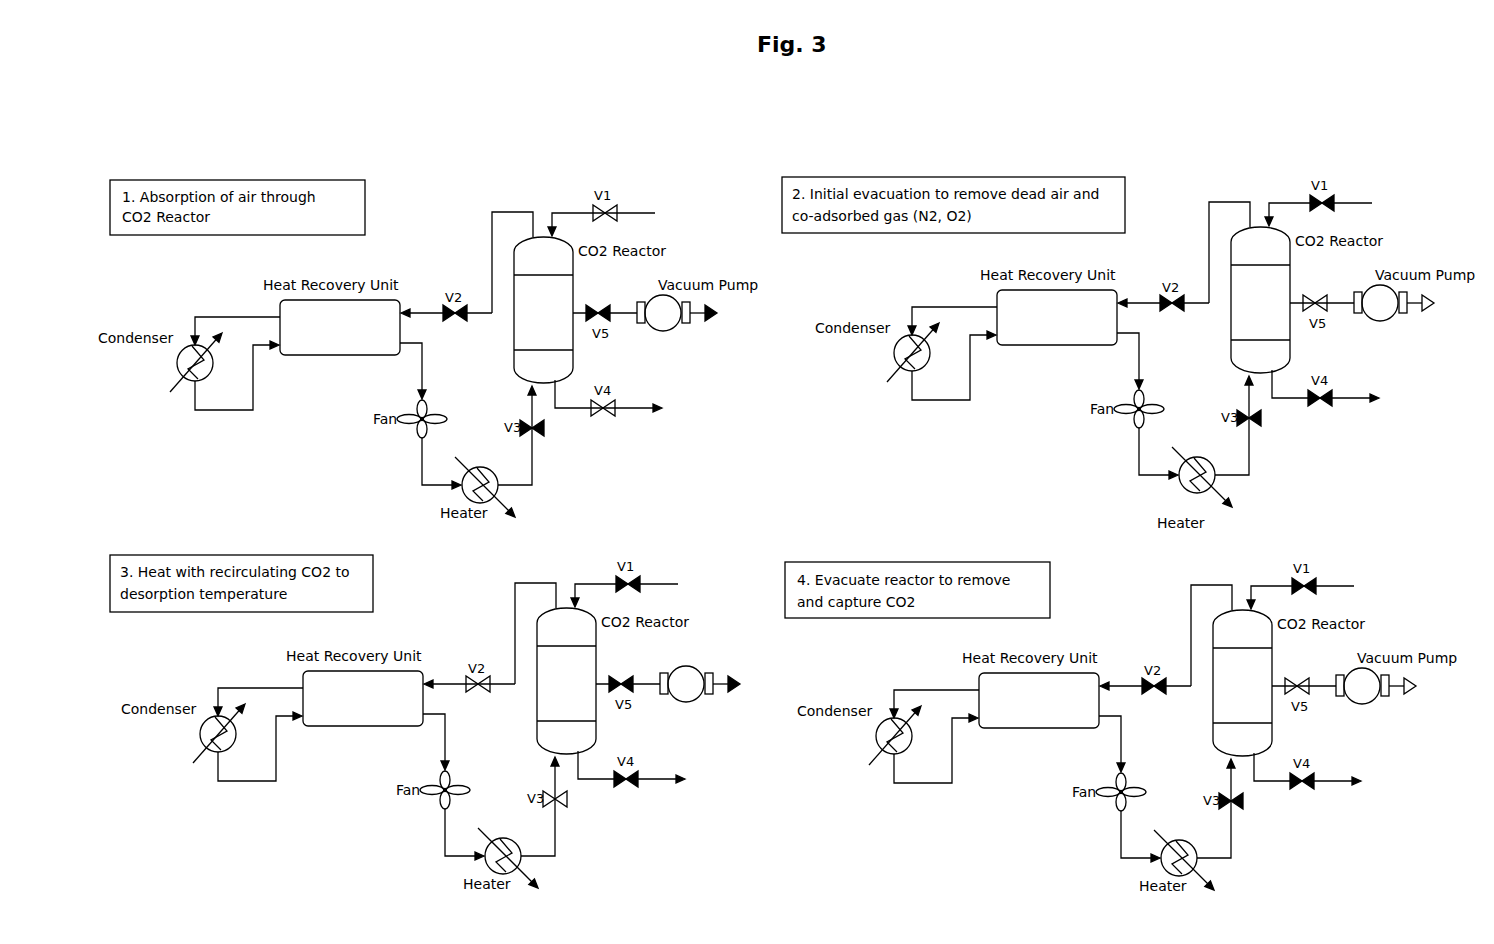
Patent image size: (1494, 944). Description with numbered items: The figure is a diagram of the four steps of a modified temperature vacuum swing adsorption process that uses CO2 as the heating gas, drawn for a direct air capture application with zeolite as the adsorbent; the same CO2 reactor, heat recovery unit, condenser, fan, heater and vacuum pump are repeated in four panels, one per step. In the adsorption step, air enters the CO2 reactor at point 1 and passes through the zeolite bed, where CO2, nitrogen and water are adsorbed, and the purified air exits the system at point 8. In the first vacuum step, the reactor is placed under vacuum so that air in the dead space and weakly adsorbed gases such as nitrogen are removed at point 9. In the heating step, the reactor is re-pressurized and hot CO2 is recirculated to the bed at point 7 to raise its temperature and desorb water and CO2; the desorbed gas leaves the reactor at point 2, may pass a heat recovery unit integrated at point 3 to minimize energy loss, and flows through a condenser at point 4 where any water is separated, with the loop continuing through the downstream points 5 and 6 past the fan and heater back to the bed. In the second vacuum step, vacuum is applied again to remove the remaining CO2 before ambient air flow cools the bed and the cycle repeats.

The air inlet point 1 is at (964, 392).
The desorbed gas exit point 2 is at (825, 432).
The heat recovery unit point 3 is at (594, 498).
The condenser point 4 is at (581, 561).
The heat recovery unit outlet line to fan 5 is at (766, 552).
The fan outlet line to heater 6 is at (783, 645).
The hot CO2 recirculation point 7 is at (879, 617).
The purified air exit point 8 is at (967, 579).
The vacuum removal point 9 is at (963, 480).